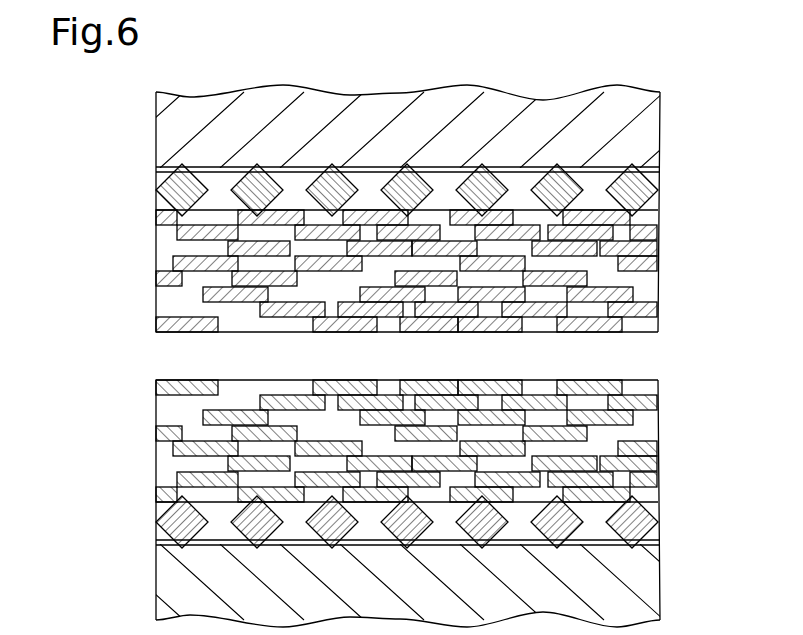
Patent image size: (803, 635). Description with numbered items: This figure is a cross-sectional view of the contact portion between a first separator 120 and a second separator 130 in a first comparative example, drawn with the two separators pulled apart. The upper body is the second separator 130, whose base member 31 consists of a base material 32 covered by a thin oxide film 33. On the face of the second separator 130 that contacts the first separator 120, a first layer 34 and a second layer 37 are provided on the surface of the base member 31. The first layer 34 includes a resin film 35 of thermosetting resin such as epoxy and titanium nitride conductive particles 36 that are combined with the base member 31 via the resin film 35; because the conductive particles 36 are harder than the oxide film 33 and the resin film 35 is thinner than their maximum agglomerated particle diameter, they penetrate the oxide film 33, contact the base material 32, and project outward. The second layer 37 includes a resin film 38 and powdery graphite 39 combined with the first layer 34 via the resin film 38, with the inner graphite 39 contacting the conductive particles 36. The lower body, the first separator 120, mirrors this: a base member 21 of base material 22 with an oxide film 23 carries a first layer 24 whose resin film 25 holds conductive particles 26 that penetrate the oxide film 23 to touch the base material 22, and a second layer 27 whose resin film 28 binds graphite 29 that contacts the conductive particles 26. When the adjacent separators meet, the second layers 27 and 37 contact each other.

The second separator 130 is at (103, 180).
The base member 31 is at (712, 100).
The base material 32 is at (655, 110).
The oxide film 33 is at (660, 170).
The first layer 34 is at (712, 198).
The resin film 35 is at (650, 215).
The conductive particles 36 is at (655, 230).
The second layer 37 is at (92, 243).
The resin film 38 is at (160, 256).
The graphite 39 is at (157, 326).
The first separator 120 is at (103, 533).
The base member 21 is at (712, 515).
The base material 22 is at (655, 598).
The oxide film 23 is at (653, 530).
The first layer 24 is at (712, 462).
The resin film 25 is at (657, 503).
The conductive particles 26 is at (657, 490).
The second layer 27 is at (92, 395).
The resin film 28 is at (160, 459).
The graphite 29 is at (157, 424).